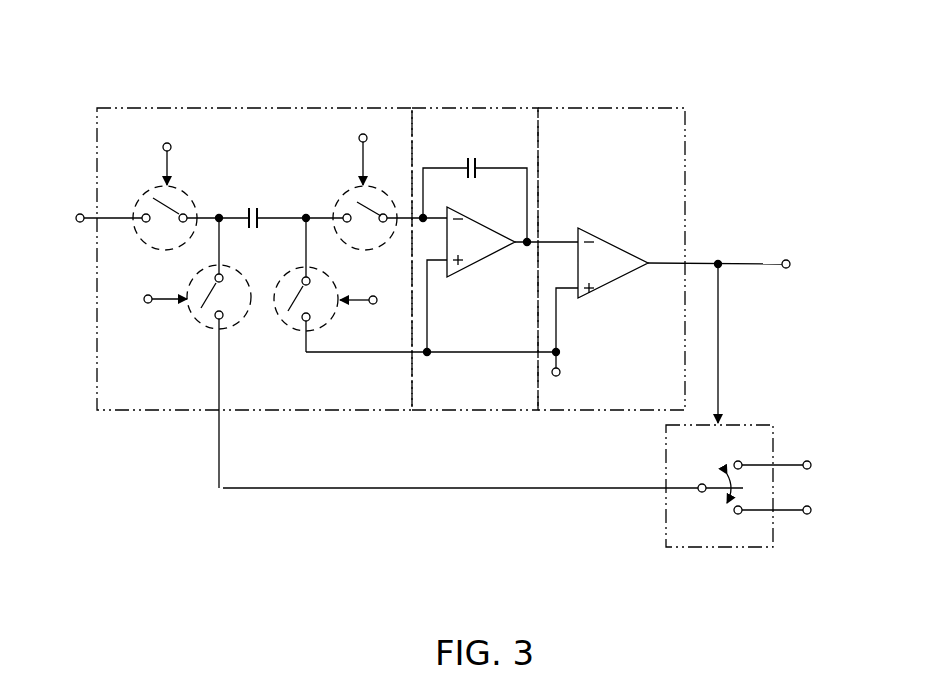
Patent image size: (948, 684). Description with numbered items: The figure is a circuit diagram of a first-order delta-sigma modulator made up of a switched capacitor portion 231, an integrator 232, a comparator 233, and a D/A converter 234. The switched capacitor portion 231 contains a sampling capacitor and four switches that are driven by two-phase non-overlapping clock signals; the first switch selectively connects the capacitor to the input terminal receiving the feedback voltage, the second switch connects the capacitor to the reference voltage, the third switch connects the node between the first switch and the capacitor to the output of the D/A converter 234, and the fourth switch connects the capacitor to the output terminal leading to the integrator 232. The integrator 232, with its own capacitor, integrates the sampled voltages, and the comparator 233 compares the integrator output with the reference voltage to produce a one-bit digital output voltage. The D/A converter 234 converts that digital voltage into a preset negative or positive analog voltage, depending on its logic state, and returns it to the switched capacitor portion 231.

The switched capacitor portion 231 is at (304, 108).
The integrator 232 is at (502, 108).
The comparator 233 is at (645, 108).
The D/A converter 234 is at (695, 547).